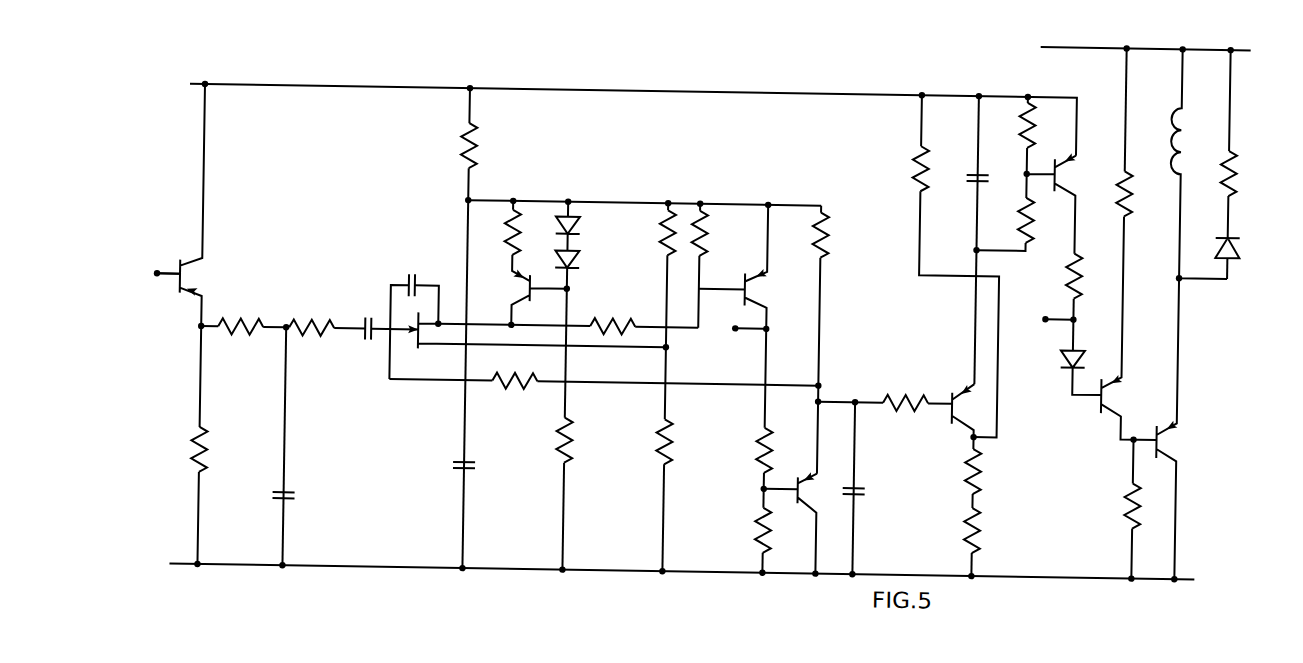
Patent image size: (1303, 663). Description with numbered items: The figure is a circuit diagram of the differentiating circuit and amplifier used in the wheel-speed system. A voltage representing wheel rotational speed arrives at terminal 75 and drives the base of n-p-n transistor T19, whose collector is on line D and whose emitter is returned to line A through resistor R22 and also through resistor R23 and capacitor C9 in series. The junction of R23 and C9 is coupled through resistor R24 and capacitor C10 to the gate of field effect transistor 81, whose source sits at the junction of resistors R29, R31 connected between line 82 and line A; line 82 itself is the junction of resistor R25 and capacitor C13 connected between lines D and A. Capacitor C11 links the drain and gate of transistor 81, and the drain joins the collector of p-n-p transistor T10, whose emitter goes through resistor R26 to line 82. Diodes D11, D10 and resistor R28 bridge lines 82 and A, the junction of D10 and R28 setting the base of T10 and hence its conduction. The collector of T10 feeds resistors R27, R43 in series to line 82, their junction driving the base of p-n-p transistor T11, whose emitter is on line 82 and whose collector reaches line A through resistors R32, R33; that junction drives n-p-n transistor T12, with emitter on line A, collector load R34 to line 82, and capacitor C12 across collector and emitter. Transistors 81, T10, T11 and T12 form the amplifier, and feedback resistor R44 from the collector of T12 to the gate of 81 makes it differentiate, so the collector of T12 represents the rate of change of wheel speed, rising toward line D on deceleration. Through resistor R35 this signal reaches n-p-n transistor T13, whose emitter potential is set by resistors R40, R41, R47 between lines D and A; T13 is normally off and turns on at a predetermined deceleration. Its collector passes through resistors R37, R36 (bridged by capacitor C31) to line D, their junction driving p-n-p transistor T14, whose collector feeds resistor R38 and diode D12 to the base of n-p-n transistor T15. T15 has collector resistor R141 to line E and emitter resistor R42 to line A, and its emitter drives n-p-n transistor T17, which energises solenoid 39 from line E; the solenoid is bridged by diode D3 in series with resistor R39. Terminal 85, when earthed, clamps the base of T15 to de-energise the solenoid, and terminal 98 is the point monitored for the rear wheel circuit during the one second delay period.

The terminal 75 is at (163, 267).
The field effect transistor 81 is at (421, 347).
The line 82 is at (557, 193).
The terminal 85 is at (1046, 310).
The terminal 98 is at (736, 324).
The solenoid 39 is at (1170, 101).
The line A is at (520, 566).
The line D is at (707, 82).
The line E is at (1104, 34).
The n-p-n transistor T19 is at (200, 272).
The p-n-p transistor T10 is at (525, 280).
The p-n-p transistor T11 is at (763, 284).
The n-p-n transistor T12 is at (818, 471).
The n-p-n transistor T13 is at (967, 379).
The p-n-p transistor T14 is at (1073, 160).
The n-p-n transistor T15 is at (1115, 385).
The n-p-n transistor T17 is at (1170, 428).
The resistor R22 is at (213, 463).
The resistor R23 is at (233, 318).
The resistor R24 is at (334, 336).
The resistor R25 is at (474, 133).
The resistor R26 is at (517, 212).
The resistor R27 is at (605, 321).
The resistor R28 is at (565, 452).
The resistor R29 is at (670, 201).
The resistor R31 is at (663, 453).
The resistor R32 is at (762, 432).
The resistor R33 is at (759, 525).
The resistor R34 is at (829, 233).
The resistor R35 is at (898, 402).
The resistor R36 is at (1025, 88).
The resistor R37 is at (1024, 188).
The resistor R38 is at (1070, 244).
The resistor R39 is at (1236, 145).
The resistor R40 is at (916, 167).
The resistor R41 is at (983, 479).
The resistor R42 is at (1138, 507).
The resistor R43 is at (707, 220).
The resistor R44 is at (527, 380).
The resistor R47 is at (964, 526).
The resistor R141 is at (1135, 181).
The capacitor C9 is at (296, 494).
The capacitor C10 is at (371, 316).
The capacitor C11 is at (414, 270).
The capacitor C12 is at (873, 480).
The capacitor C13 is at (462, 464).
The capacitor C31 is at (973, 162).
The diode D3 is at (1229, 223).
The diode D10 is at (587, 256).
The diode D11 is at (587, 218).
The diode D12 is at (1064, 346).